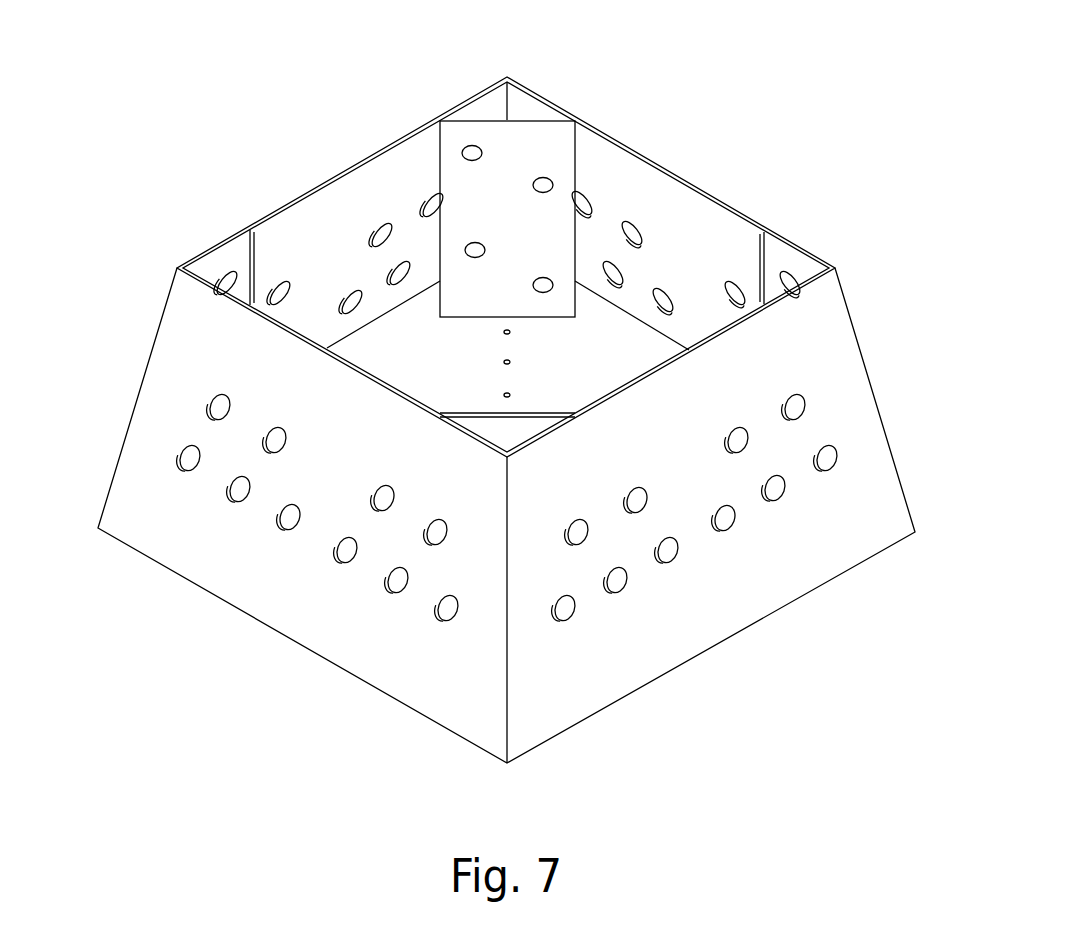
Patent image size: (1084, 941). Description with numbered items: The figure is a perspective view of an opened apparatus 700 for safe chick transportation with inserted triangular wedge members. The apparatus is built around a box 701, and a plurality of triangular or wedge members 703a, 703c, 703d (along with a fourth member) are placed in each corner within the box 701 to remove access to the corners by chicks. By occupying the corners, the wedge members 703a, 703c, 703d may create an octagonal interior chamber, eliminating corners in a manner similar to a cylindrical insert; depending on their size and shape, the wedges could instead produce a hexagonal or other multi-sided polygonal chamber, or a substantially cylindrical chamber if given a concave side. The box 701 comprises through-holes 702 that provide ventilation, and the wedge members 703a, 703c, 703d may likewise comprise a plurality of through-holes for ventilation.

The opened apparatus for safe chick transportation 700 is at (187, 123).
The box 701 is at (693, 183).
The through-holes 702 is at (737, 520).
The wedge member 703a is at (505, 148).
The wedge member 703c is at (790, 262).
The wedge member 703d is at (508, 428).